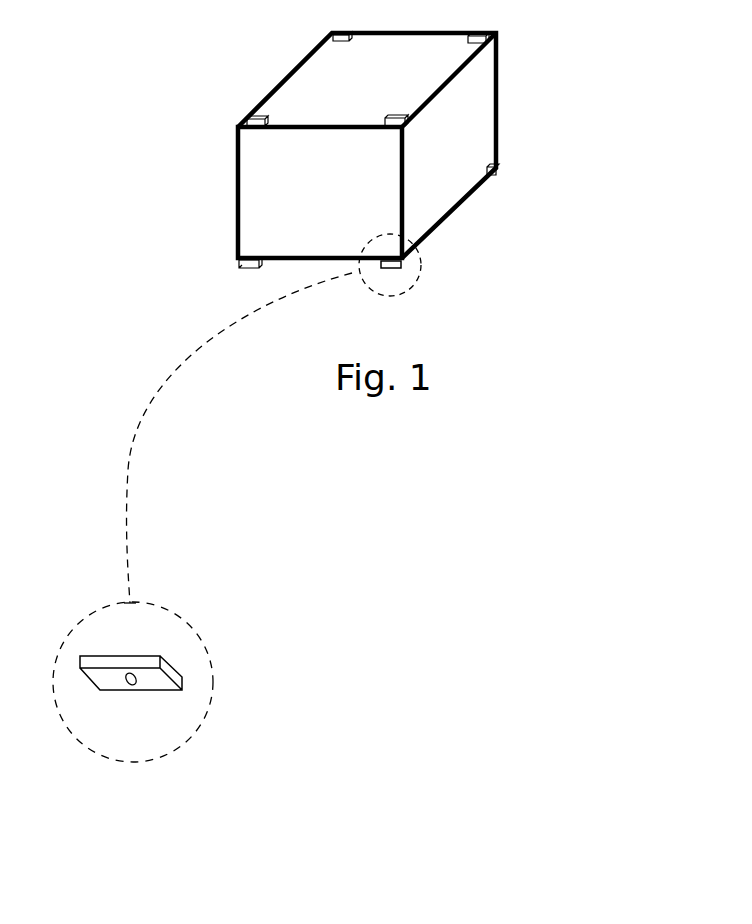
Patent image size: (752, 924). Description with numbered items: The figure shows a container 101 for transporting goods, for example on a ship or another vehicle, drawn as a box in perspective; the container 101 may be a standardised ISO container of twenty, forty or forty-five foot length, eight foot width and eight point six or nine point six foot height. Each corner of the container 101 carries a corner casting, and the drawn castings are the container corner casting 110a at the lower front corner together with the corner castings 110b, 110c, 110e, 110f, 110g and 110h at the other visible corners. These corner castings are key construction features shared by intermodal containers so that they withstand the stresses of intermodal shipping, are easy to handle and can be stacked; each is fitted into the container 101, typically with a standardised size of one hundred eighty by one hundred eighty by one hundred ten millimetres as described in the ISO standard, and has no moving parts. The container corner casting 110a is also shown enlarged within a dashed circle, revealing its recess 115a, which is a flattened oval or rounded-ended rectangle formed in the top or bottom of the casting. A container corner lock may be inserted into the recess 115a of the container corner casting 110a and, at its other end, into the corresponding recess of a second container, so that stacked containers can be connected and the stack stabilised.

The container 101 is at (344, 209).
The container corner casting 110a is at (403, 260).
The corner casting 110b is at (497, 168).
The corner casting 110c is at (238, 262).
The corner casting 110e is at (497, 33).
The corner casting 110f is at (330, 33).
The corner casting 110g is at (250, 118).
The corner casting 110h is at (407, 120).
The recess 115a is at (129, 674).